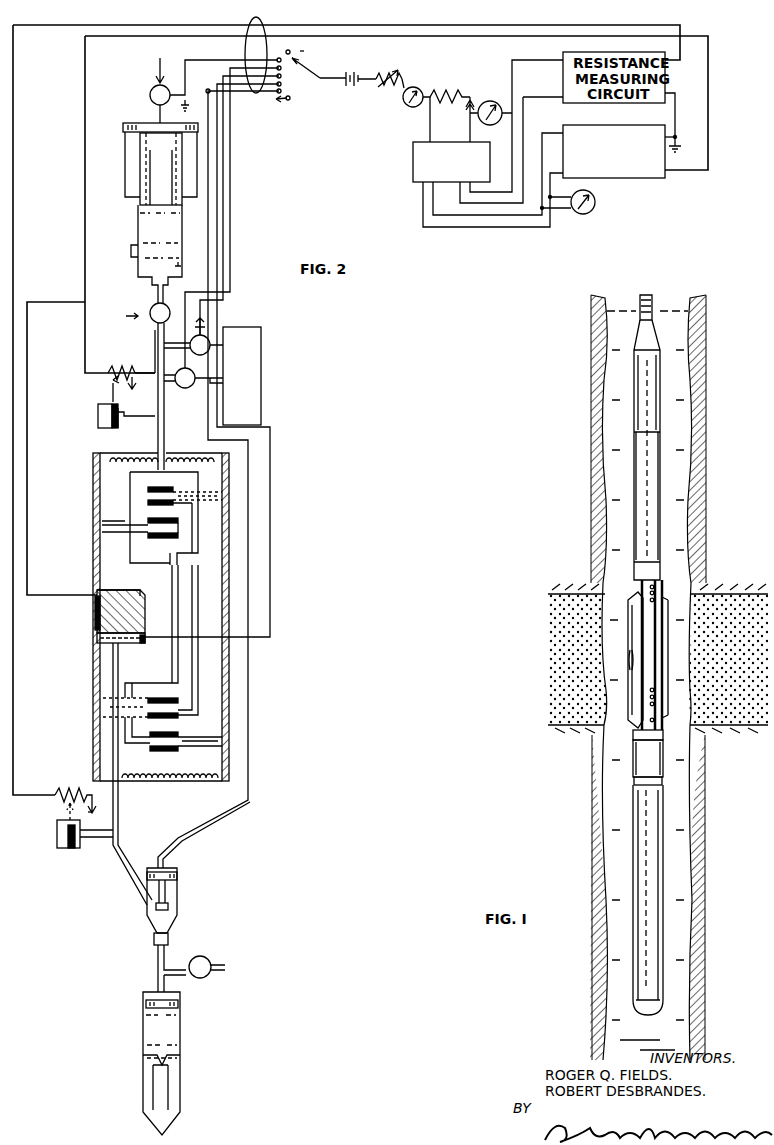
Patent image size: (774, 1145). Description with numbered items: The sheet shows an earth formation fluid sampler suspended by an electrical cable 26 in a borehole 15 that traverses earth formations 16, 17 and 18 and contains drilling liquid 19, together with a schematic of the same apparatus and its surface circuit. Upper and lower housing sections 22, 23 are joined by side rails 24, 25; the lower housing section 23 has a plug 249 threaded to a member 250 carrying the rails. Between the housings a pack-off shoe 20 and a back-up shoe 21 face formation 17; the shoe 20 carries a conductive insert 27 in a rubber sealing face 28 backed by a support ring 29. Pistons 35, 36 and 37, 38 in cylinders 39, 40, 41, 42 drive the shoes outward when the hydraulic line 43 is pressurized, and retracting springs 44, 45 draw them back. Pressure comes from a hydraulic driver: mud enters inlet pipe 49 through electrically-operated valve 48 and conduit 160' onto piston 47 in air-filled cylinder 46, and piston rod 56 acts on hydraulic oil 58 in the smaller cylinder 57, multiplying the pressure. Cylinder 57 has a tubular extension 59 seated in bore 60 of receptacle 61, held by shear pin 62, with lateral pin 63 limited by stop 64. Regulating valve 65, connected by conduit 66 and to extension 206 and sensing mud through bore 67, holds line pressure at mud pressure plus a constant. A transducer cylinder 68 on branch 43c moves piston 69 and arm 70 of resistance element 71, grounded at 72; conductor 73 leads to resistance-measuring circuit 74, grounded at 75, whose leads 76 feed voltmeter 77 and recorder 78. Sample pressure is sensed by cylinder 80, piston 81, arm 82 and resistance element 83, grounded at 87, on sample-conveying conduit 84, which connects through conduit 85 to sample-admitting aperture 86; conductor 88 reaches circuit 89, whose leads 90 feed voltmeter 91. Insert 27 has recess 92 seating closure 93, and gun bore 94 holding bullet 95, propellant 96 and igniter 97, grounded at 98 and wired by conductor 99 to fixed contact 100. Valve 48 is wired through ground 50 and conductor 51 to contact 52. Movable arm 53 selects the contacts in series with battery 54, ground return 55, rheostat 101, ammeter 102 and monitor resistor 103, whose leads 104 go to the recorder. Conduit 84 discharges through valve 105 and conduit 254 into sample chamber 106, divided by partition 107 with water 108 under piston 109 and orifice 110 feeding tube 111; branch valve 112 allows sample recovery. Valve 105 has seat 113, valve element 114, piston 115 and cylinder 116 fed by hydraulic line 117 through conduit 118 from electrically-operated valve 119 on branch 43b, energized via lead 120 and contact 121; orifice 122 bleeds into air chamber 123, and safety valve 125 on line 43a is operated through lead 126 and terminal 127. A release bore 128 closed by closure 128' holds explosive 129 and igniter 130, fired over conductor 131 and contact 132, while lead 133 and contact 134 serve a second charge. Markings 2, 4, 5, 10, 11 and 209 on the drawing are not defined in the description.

In FIG. 1, the upper tool section 2 is at (670, 455).
In FIG. 1, the tool section 4 is at (668, 405).
In FIG. 1, the tool section 5 is at (668, 520).
In FIG. 1, the lower tool section 10 is at (670, 745).
In FIG. 1, the pad electrodes 11 is at (627, 655).
In FIG. 1, the borehole 15 is at (700, 306).
In FIG. 1, the earth formation 16 is at (732, 525).
In FIG. 1, the earth formation 17 is at (732, 668).
In FIG. 1, the earth formation 18 is at (732, 776).
In FIG. 1, the drilling liquid 19 is at (614, 306).
In FIG. 2, the pack-off shoe 20 is at (86, 565).
In FIG. 1, the pack-off shoe 20 is at (630, 700).
In FIG. 2, the back-up shoe 21 is at (220, 530).
In FIG. 1, the back-up shoe 21 is at (660, 652).
In FIG. 1, the upper pressure-resistant housing section 22 is at (636, 455).
In FIG. 1, the lower pressure-resistant housing section 23 is at (632, 835).
In FIG. 1, the side rail 24 is at (600, 583).
In FIG. 1, the side rail 25 is at (693, 592).
In FIG. 2, the electrical cable 26 is at (262, 88).
In FIG. 1, the electrical cable 26 is at (655, 310).
In FIG. 2, the insert 27 is at (82, 631).
In FIG. 1, the insert 27 is at (596, 689).
In FIG. 1, the sealing face 28 is at (625, 628).
In FIG. 1, the support ring 29 is at (636, 734).
In FIG. 2, the piston 35 is at (118, 523).
In FIG. 2, the piston 36 is at (140, 740).
In FIG. 2, the piston 37 is at (218, 495).
In FIG. 2, the piston 38 is at (218, 750).
In FIG. 2, the hydraulic cylinder 39 is at (162, 538).
In FIG. 2, the hydraulic cylinder 40 is at (178, 714).
In FIG. 2, the cylinder 41 is at (150, 489).
In FIG. 2, the cylinder 42 is at (158, 745).
In FIG. 2, the hydraulic line 43 is at (192, 447).
In FIG. 2, the hydraulic line 43a is at (175, 348).
In FIG. 2, the side branch 43b is at (165, 410).
In FIG. 2, the branch 43c is at (146, 437).
In FIG. 2, the upper retracting spring 44 is at (150, 456).
In FIG. 2, the lower retracting spring 45 is at (200, 782).
In FIG. 2, the hollow cylinder 46 is at (123, 190).
In FIG. 2, the piston 47 is at (122, 136).
In FIG. 2, the electrically-operated valve 48 is at (150, 101).
In FIG. 2, the inlet pipe 49 is at (155, 78).
In FIG. 2, the ground connection 50 is at (195, 98).
In FIG. 2, the electrical conductor 51 is at (214, 58).
In FIG. 2, the fixed contact 52 is at (279, 57).
In FIG. 2, the movable arm 53 is at (294, 60).
In FIG. 2, the battery 54 is at (358, 72).
In FIG. 2, the ground return 55 is at (474, 72).
In FIG. 2, the piston rod 56 is at (140, 162).
In FIG. 2, the cylinder 57 is at (137, 222).
In FIG. 2, the hydraulic oil 58 is at (168, 237).
In FIG. 2, the tubular extension 59 is at (152, 283).
In FIG. 2, the cylindrical bore 60 is at (176, 268).
In FIG. 2, the receptacle 61 is at (138, 272).
In FIG. 2, the shear pin 62 is at (182, 262).
In FIG. 2, the lateral pin 63 is at (132, 256).
In FIG. 2, the mechanical stop 64 is at (132, 247).
In FIG. 2, the regulating valve 65 is at (168, 300).
In FIG. 2, the conduit 66 is at (155, 303).
In FIG. 2, the conduit or bore 67 is at (150, 316).
In FIG. 2, the cylinder 68 is at (98, 414).
In FIG. 2, the piston 69 is at (114, 430).
In FIG. 2, the movable arm 70 is at (113, 383).
In FIG. 2, the resistance element 71 is at (105, 372).
In FIG. 2, the ground point 72 is at (137, 385).
In FIG. 2, the electrical conductor 73 is at (83, 322).
In FIG. 2, the resistance-measuring circuit 74 is at (615, 178).
In FIG. 2, the ground point 75 is at (678, 145).
In FIG. 2, the leads 76 is at (553, 130).
In FIG. 2, the voltmeter 77 is at (596, 204).
In FIG. 2, the recorder 78 is at (412, 168).
In FIG. 2, the cylinder 80 is at (58, 848).
In FIG. 2, the piston 81 is at (74, 848).
In FIG. 2, the movable arm 82 is at (68, 805).
In FIG. 2, the resistance element 83 is at (62, 793).
In FIG. 2, the sample-conveying conduit 84 is at (120, 820).
In FIG. 2, the conduit 85 is at (122, 643).
In FIG. 2, the sample-admitting aperture 86 is at (95, 636).
In FIG. 2, the ground 87 is at (100, 806).
In FIG. 2, the electrical conductor 88 is at (13, 722).
In FIG. 2, the resistance-measuring circuit 89 is at (565, 53).
In FIG. 2, the output leads 90 is at (562, 94).
In FIG. 2, the voltmeter 91 is at (480, 100).
In FIG. 2, the shallow recess 92 is at (97, 610).
In FIG. 2, the closure 93 is at (97, 625).
In FIG. 2, the gun bore 94 is at (128, 595).
In FIG. 2, the bullet 95 is at (138, 612).
In FIG. 2, the propellant 96 is at (135, 598).
In FIG. 2, the electrical igniter 97 is at (107, 590).
In FIG. 2, the ground point 98 is at (152, 614).
In FIG. 2, the electrical conductor 99 is at (27, 385).
In FIG. 2, the fixed contact 100 is at (262, 46).
In FIG. 2, the rheostat 101 is at (380, 88).
In FIG. 2, the indicating ammeter 102 is at (408, 80).
In FIG. 2, the monitor resistor 103 is at (445, 86).
In FIG. 2, the leads 104 is at (462, 117).
In FIG. 2, the hydraulically-operated valve 105 is at (184, 926).
In FIG. 2, the sample-receiving chamber 106 is at (181, 1033).
In FIG. 2, the partition 107 is at (172, 1052).
In FIG. 2, the water 108 is at (174, 1035).
In FIG. 2, the piston 109 is at (181, 1005).
In FIG. 2, the fluid-flow controlling orifice 110 is at (152, 1052).
In FIG. 2, the tube 111 is at (170, 1097).
In FIG. 2, the valve 112 is at (206, 958).
In FIG. 2, the seat 113 is at (153, 939).
In FIG. 2, the movable valve element 114 is at (178, 905).
In FIG. 2, the piston 115 is at (178, 878).
In FIG. 2, the cylinder 116 is at (185, 862).
In FIG. 2, the hydraulic line 117 is at (218, 840).
In FIG. 2, the conduit 118 is at (198, 371).
In FIG. 2, the electrically-operated valve 119 is at (178, 387).
In FIG. 2, the lead 120 is at (219, 282).
In FIG. 2, the fixed contact 121 is at (283, 76).
In FIG. 2, the fluid-flow controlling orifice 122 is at (224, 382).
In FIG. 2, the chamber 123 is at (262, 350).
In FIG. 2, the electrically-operated valve 125 is at (210, 340).
In FIG. 2, the lead 126 is at (210, 238).
In FIG. 2, the terminal 127 is at (268, 102).
In FIG. 2, the bore 128 is at (75, 678).
In FIG. 2, the closure 128' is at (66, 658).
In FIG. 2, the explosive material 129 is at (110, 646).
In FIG. 2, the electrical igniter 130 is at (140, 645).
In FIG. 2, the electrical conductor 131 is at (270, 605).
In FIG. 2, the fixed contact 132 is at (283, 92).
In FIG. 2, the lead 133 is at (285, 104).
In FIG. 2, the fixed contact 134 is at (290, 101).
In FIG. 2, the conduit 160' is at (123, 113).
In FIG. 2, the extension 206 is at (148, 357).
In FIG. 2, the conductor 209 is at (190, 387).
In FIG. 1, the plug 249 is at (630, 782).
In FIG. 1, the member 250 is at (630, 752).
In FIG. 2, the conduit 254 is at (158, 960).